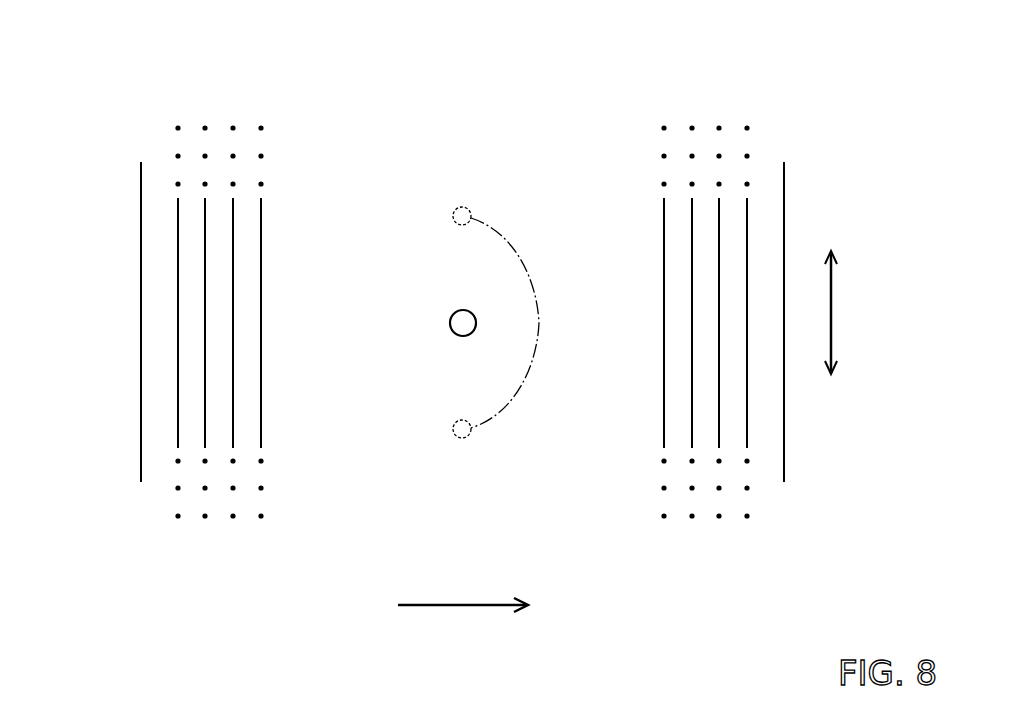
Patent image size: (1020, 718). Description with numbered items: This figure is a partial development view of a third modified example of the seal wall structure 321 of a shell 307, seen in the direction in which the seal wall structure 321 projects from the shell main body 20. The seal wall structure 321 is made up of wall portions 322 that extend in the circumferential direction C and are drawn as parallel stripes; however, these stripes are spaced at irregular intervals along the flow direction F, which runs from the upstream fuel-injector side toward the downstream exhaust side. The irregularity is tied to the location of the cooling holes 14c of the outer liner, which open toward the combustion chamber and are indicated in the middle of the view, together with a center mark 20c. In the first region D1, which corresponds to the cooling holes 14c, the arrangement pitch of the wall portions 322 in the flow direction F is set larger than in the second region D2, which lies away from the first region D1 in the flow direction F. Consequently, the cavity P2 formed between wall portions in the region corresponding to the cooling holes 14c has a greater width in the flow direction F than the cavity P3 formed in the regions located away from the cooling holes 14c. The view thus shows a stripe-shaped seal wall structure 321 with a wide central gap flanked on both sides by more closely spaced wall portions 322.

The shell 307 is at (78, 197).
The shell main body 20 is at (155, 213).
The seal wall structure 321 is at (178, 270).
The wall portions 322 is at (262, 385).
The cavity P3 is at (190, 408).
The second region D2 is at (261, 113).
The first region D1 is at (664, 113).
The center of head 20c is at (449, 323).
The cooling holes 14c is at (523, 322).
The cavity P2 is at (584, 412).
The flow direction F is at (458, 608).
The circumferential direction C is at (832, 312).